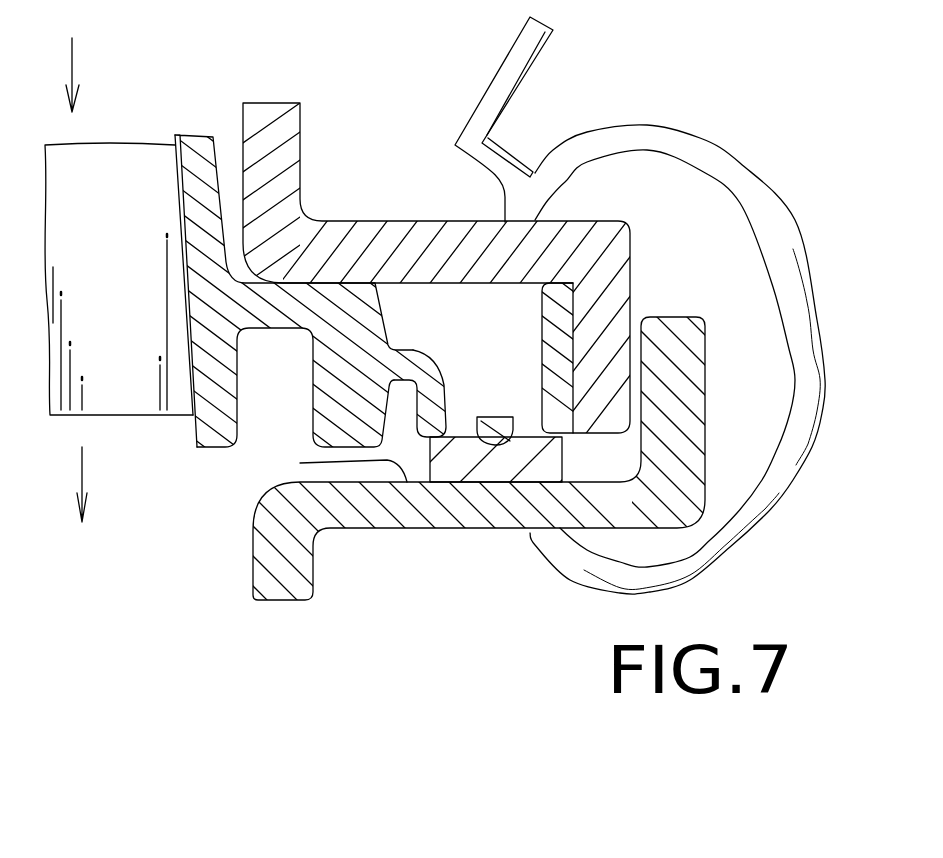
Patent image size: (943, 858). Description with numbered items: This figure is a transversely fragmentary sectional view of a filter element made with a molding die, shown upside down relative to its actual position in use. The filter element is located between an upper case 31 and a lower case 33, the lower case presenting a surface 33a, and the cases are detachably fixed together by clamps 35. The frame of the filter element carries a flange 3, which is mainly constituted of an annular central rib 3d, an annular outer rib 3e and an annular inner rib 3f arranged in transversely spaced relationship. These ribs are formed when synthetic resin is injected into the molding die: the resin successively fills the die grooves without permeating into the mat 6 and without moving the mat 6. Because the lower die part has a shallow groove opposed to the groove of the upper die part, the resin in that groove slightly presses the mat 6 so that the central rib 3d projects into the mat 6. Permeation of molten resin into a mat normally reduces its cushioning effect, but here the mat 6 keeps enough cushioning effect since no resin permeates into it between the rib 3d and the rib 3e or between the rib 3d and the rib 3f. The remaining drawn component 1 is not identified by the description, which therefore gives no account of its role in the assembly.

The shaft 1 is at (135, 388).
The upper case 31 is at (400, 257).
The flange 3 is at (466, 417).
The annular inner rib 3f is at (430, 405).
The annular central rib 3d is at (497, 410).
The annular outer rib 3e is at (553, 338).
The mat 6 is at (490, 463).
The lower case 33 is at (292, 578).
The surface 33a is at (300, 463).
The clamps 35 is at (793, 252).